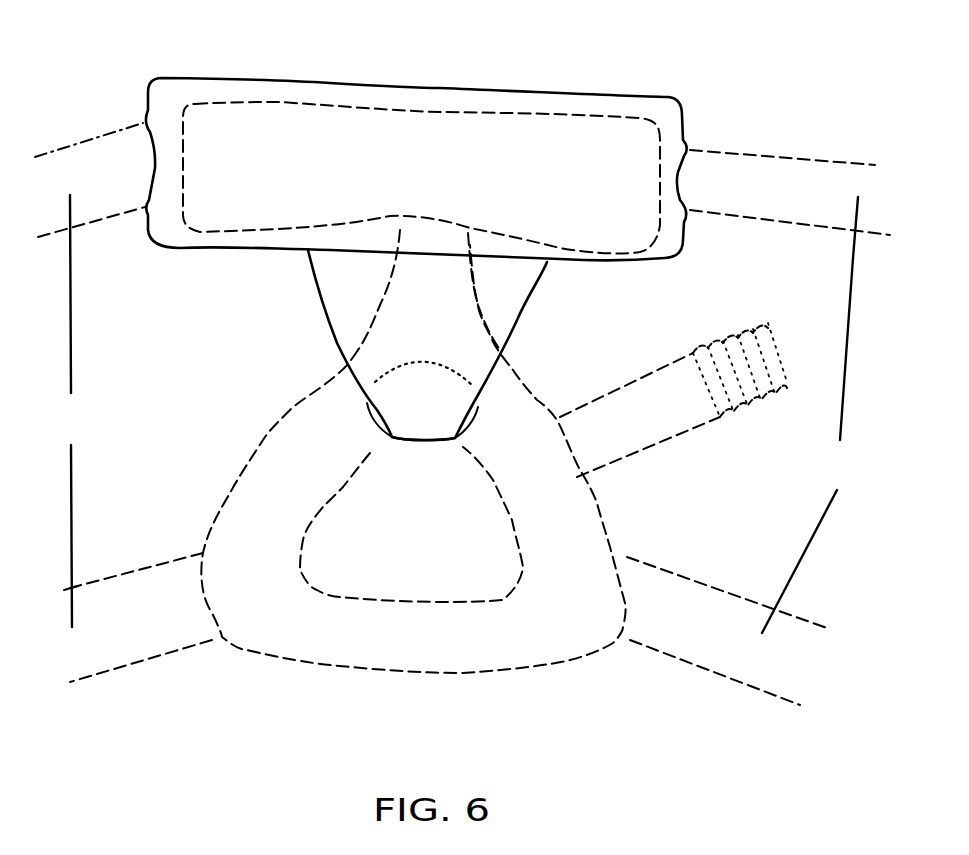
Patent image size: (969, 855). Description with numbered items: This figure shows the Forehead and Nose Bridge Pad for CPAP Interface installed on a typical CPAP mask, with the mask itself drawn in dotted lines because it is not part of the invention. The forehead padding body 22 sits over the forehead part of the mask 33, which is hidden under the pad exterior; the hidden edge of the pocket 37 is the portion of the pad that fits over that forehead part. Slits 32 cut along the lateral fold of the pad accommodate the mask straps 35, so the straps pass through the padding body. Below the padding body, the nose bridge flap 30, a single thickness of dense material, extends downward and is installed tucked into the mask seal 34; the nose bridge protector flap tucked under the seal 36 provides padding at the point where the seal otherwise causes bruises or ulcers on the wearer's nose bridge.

The forehead padding body 22 is at (416, 138).
The nose bridge flap 30 is at (490, 307).
The slits 32 is at (155, 167).
The forehead part of CPAP mask 33 is at (416, 138).
The seal of CPAP mask 34 is at (313, 447).
The straps of CPAP mask 35 is at (456, 414).
The nose bridge protector flap tucked under the seal 36 is at (438, 458).
The hidden edge of the receiving pocket 37 is at (332, 107).